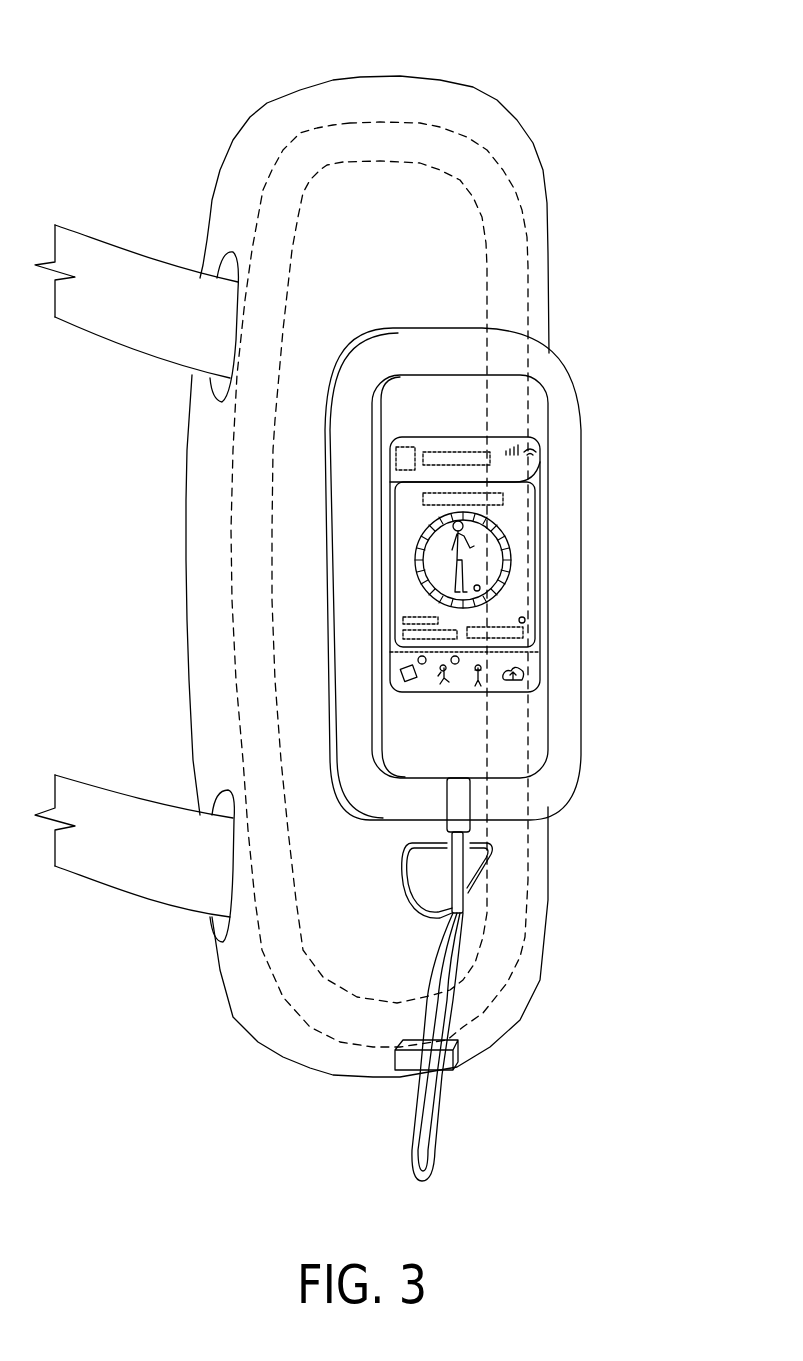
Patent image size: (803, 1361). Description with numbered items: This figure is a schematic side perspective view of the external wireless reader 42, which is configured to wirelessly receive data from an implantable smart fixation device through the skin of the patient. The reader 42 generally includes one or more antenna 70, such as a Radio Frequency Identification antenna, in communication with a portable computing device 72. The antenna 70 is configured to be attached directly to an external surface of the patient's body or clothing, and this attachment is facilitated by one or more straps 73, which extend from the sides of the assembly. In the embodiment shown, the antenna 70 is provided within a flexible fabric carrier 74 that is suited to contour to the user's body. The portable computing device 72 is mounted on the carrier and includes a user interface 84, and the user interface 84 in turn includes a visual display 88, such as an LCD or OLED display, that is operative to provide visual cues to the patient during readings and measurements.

The external wireless reader 42 is at (593, 107).
The antenna 70 is at (440, 127).
The portable computing device 72 is at (552, 487).
The strap 73 is at (125, 342).
The flexible fabric carrier 74 is at (353, 190).
The user interface 84 is at (440, 1105).
The visual display 88 is at (523, 553).